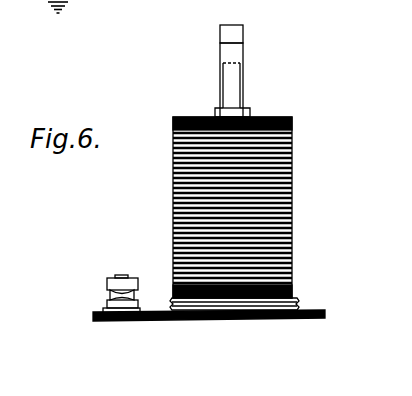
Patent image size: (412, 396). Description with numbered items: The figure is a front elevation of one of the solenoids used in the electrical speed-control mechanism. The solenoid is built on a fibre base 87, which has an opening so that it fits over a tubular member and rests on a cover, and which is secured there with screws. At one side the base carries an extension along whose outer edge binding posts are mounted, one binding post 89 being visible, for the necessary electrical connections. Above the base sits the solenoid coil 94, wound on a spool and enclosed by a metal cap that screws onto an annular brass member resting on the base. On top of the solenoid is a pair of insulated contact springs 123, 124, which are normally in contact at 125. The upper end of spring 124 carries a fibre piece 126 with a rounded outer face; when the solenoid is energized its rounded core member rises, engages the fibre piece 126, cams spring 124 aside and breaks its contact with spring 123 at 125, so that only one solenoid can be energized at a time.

The fibre base 87 is at (322, 310).
The binding post 89 is at (122, 276).
The solenoid coil 94 is at (294, 183).
The contact spring 123 is at (233, 85).
The contact spring 124 is at (238, 50).
The contact point 125 is at (237, 62).
The fibre piece 126 is at (237, 32).